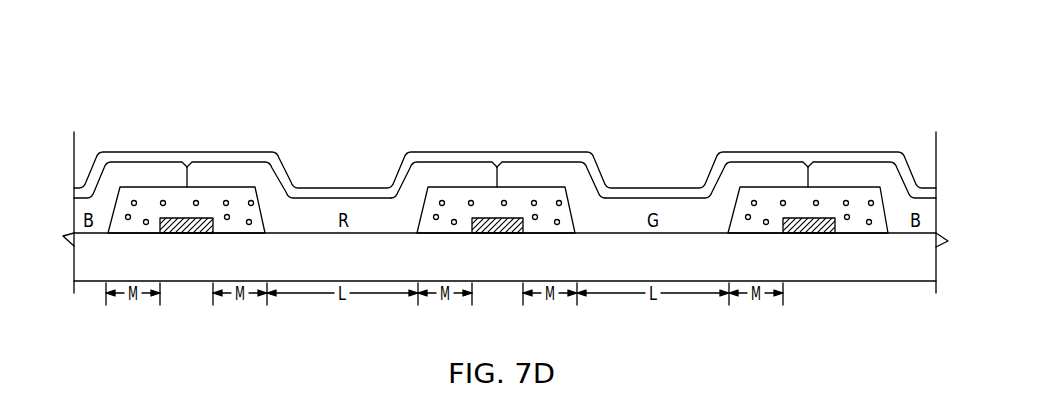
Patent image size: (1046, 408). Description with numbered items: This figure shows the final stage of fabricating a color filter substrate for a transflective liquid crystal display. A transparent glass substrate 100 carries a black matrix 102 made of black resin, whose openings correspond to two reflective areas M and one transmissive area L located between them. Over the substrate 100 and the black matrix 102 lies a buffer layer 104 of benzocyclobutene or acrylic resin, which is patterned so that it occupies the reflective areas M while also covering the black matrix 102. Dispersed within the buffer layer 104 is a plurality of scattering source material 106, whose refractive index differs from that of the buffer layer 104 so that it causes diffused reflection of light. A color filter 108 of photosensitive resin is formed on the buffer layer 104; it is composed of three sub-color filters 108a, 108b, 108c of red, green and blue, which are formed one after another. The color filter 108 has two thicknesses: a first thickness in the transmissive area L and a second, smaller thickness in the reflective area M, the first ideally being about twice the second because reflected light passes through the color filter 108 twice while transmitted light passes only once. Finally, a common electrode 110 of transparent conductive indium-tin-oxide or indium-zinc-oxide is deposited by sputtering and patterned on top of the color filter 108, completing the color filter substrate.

The substrate 100 is at (513, 272).
The black matrix 102 is at (182, 217).
The buffer layer 104 is at (232, 186).
The scattering source material 106 is at (131, 197).
The color filter 108 is at (505, 107).
The sub-color filter 108a is at (443, 161).
The sub-color filter 108b is at (551, 137).
The sub-color filter 108c is at (148, 161).
The common electrode 110 is at (580, 157).